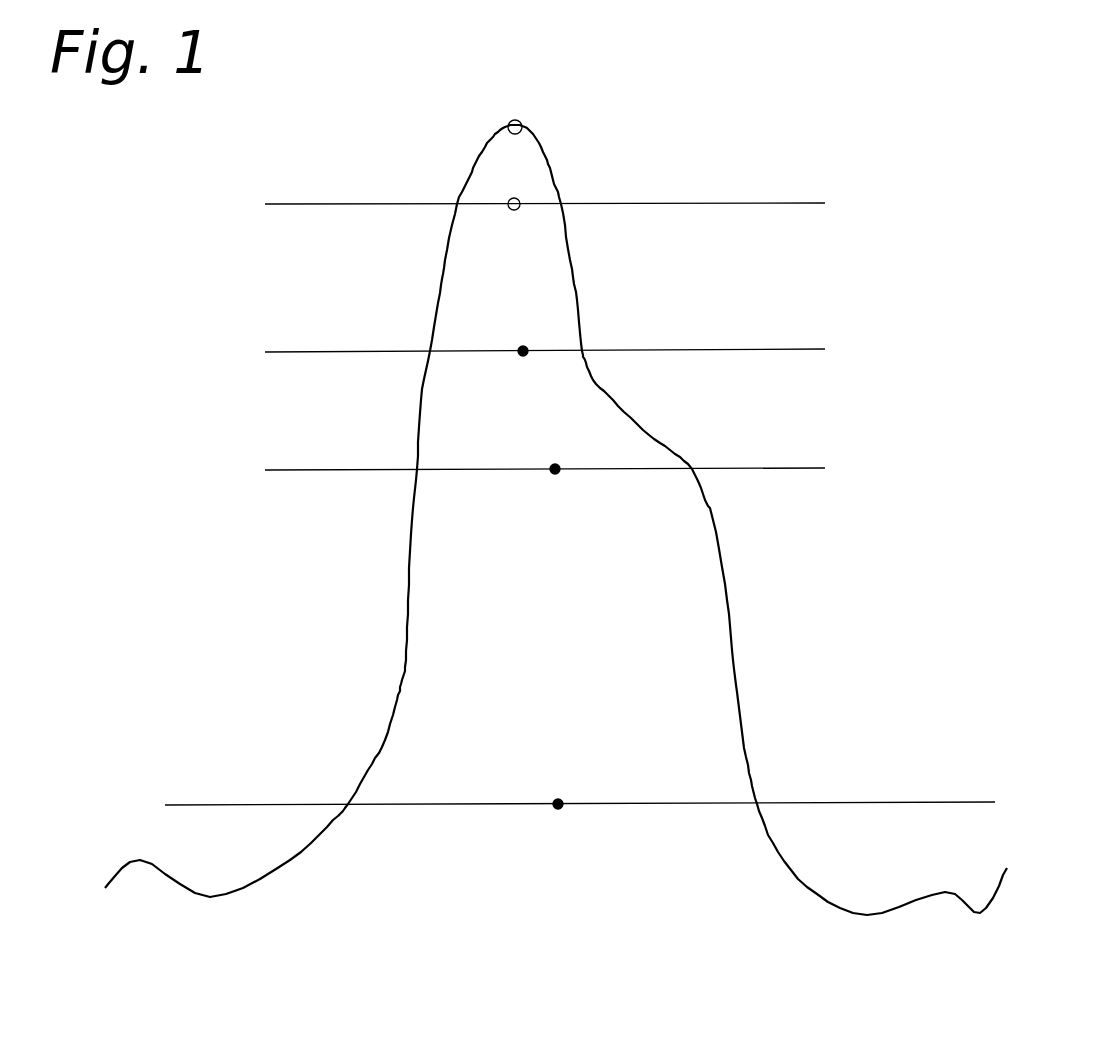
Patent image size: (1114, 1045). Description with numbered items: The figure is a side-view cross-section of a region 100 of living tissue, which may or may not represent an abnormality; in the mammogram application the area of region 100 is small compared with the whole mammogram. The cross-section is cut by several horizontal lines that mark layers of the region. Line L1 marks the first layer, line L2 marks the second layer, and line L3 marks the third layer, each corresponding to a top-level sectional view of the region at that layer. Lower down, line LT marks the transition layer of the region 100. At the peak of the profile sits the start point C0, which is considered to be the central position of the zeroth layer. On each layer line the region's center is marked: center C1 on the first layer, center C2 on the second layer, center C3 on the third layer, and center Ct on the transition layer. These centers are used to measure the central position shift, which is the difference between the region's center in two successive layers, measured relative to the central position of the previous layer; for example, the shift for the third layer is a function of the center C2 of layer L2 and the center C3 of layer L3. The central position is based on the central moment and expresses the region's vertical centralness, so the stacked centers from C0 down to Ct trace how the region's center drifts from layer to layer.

The region of living tissue 100 is at (908, 422).
The first layer line L1 is at (546, 202).
The second layer line L2 is at (545, 348).
The third layer line L3 is at (545, 467).
The transition layer line LT is at (955, 802).
The start point C0 is at (515, 120).
The central position of first layer C1 is at (515, 222).
The central position of second layer C2 is at (522, 368).
The central position of third layer C3 is at (555, 485).
The central position of transition layer Ct is at (557, 820).